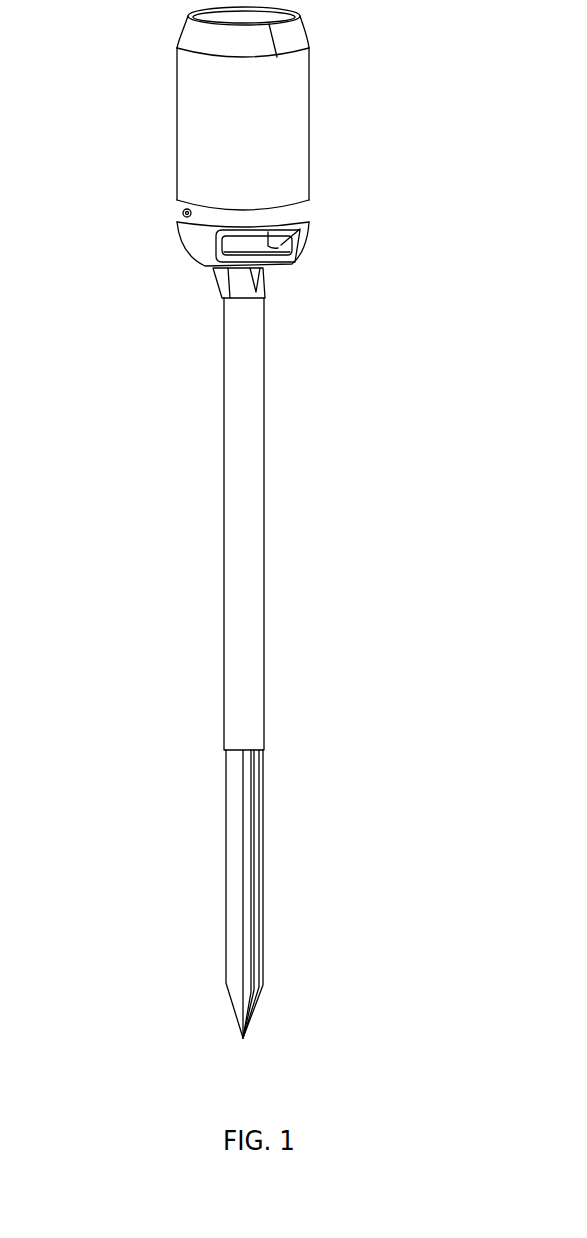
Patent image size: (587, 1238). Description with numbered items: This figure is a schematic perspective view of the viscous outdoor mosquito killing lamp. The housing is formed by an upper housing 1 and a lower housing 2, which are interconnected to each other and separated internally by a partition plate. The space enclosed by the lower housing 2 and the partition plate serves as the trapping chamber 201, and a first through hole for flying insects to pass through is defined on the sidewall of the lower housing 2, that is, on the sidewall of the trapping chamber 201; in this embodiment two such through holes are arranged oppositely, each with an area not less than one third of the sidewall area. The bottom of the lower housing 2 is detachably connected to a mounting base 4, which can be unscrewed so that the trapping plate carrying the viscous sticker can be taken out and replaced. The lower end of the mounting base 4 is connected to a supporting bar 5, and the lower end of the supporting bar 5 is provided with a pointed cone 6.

The upper housing 1 is at (297, 126).
The lower housing 2 is at (197, 244).
The trapping chamber 201 is at (301, 226).
The mounting base 4 is at (265, 284).
The supporting bar 5 is at (258, 384).
The pointed cone 6 is at (262, 868).